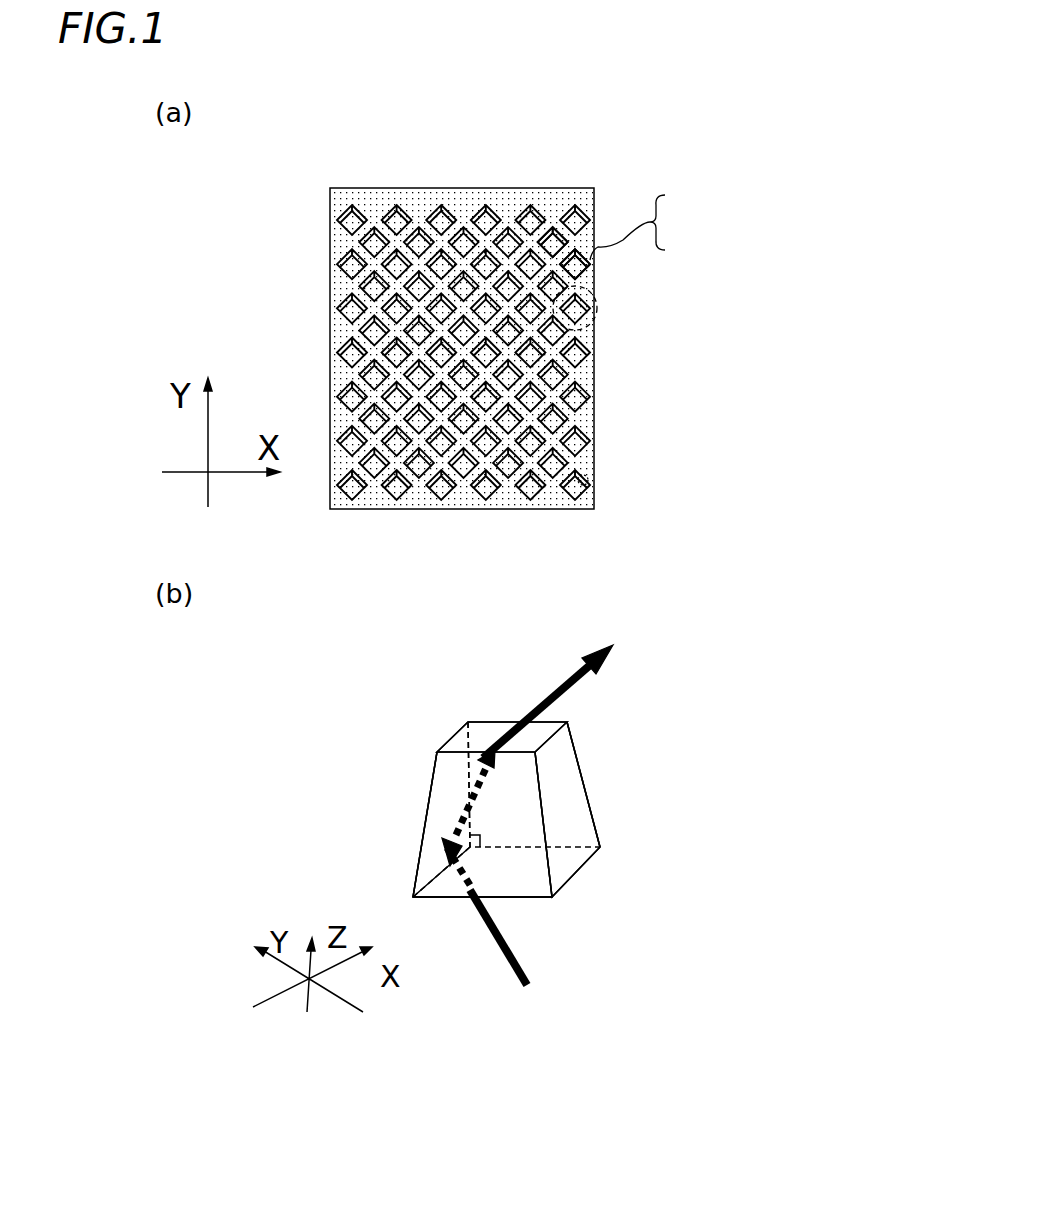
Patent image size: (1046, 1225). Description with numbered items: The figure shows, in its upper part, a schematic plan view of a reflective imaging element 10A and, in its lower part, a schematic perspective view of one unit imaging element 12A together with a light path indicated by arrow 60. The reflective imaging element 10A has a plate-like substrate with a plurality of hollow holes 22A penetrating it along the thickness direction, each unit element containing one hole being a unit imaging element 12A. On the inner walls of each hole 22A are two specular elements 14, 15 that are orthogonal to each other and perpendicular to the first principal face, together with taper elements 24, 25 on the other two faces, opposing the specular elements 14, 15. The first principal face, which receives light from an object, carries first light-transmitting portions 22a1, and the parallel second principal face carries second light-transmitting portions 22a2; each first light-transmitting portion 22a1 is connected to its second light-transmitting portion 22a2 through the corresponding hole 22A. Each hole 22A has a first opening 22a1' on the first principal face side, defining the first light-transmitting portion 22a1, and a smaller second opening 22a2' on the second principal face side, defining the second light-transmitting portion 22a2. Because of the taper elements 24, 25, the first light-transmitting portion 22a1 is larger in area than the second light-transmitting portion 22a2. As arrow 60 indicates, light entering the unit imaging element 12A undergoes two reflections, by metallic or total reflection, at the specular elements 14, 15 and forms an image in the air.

The reflective imaging element 10A is at (632, 162).
The unit imaging element 12A is at (594, 320).
The holes 22A is at (779, 219).
The first light-transmitting portion 22a1 is at (491, 546).
The second light-transmitting portion 22a2 is at (651, 521).
The first opening 22a1' is at (642, 251).
The second opening 22a2' is at (655, 240).
The specular element 14 is at (338, 491).
The specular element 15 is at (361, 493).
The taper element 24 is at (558, 487).
The taper element 25 is at (590, 484).
The light path 60 is at (520, 982).